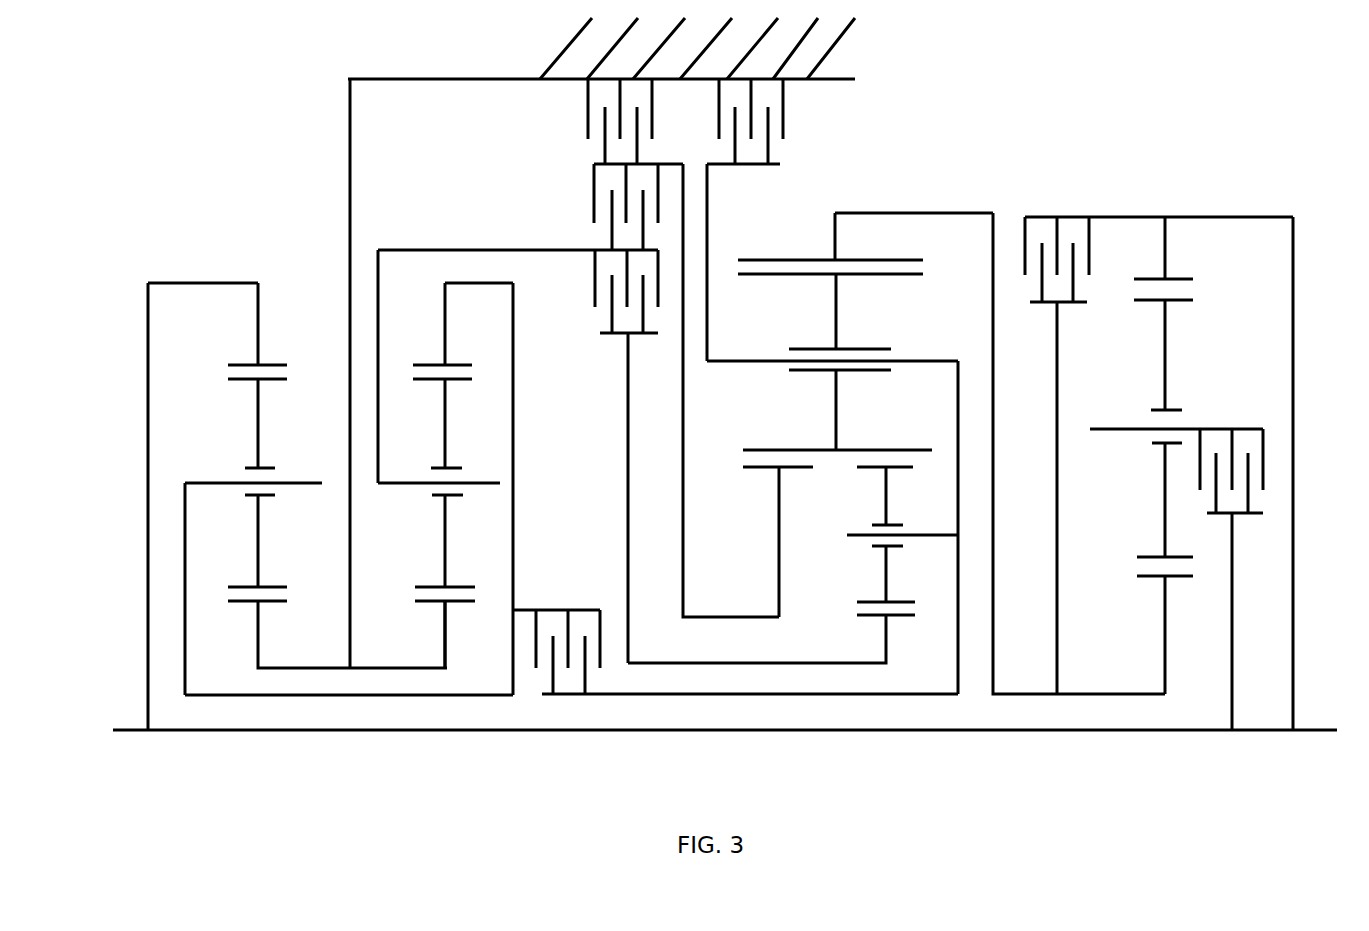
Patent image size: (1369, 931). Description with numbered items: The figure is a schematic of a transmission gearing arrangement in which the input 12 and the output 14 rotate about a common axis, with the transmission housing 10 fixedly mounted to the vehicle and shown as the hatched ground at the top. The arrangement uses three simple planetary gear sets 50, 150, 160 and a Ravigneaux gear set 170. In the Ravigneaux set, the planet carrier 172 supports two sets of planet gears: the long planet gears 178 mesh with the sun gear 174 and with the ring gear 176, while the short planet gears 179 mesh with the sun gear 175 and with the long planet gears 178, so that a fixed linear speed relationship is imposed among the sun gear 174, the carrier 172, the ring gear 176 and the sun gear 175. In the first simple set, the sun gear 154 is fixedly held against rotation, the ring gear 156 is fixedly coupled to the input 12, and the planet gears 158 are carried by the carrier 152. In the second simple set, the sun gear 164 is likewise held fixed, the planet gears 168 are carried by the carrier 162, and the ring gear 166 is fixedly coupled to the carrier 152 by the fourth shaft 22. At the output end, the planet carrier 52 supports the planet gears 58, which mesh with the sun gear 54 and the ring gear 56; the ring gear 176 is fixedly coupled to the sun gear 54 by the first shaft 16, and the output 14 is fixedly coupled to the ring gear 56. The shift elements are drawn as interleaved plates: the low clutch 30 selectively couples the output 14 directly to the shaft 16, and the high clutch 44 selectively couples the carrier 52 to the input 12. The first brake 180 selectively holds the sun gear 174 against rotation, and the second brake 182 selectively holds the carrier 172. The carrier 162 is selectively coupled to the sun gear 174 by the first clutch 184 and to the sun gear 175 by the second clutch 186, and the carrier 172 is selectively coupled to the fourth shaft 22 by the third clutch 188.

The transmission housing 10 is at (573, 42).
The input 12 is at (560, 730).
The output 14 is at (1337, 730).
The first shaft 16 is at (1012, 693).
The fourth shaft 22 is at (462, 695).
The low clutch 30 is at (1045, 217).
The high clutch 44 is at (1247, 428).
The simple planetary gear set 50 is at (1171, 502).
The planet carrier 52 is at (1107, 432).
The sun gear 54 is at (1165, 660).
The ring gear 56 is at (1163, 247).
The planet gears 58 is at (1167, 373).
The simple planetary gear set 150 is at (330, 535).
The carrier 152 is at (193, 482).
The sun gear 154 is at (262, 628).
The ring gear 156 is at (260, 328).
The planet gears 158 is at (260, 413).
The simple planetary gear set 160 is at (431, 433).
The carrier 162 is at (403, 483).
The sun gear 164 is at (447, 633).
The ring gear 166 is at (442, 328).
The planet gears 168 is at (442, 438).
The Ravigneaux gear set 170 is at (810, 475).
The planet carrier 172 is at (930, 360).
The sun gear 174 is at (779, 563).
The sun gear 175 is at (886, 647).
The ring gear 176 is at (835, 233).
The long planet gears 178 is at (835, 315).
The short planet gears 179 is at (886, 592).
The first brake 180 is at (588, 117).
The second brake 182 is at (783, 113).
The first clutch 184 is at (594, 198).
The second clutch 186 is at (595, 275).
The third clutch 188 is at (550, 610).